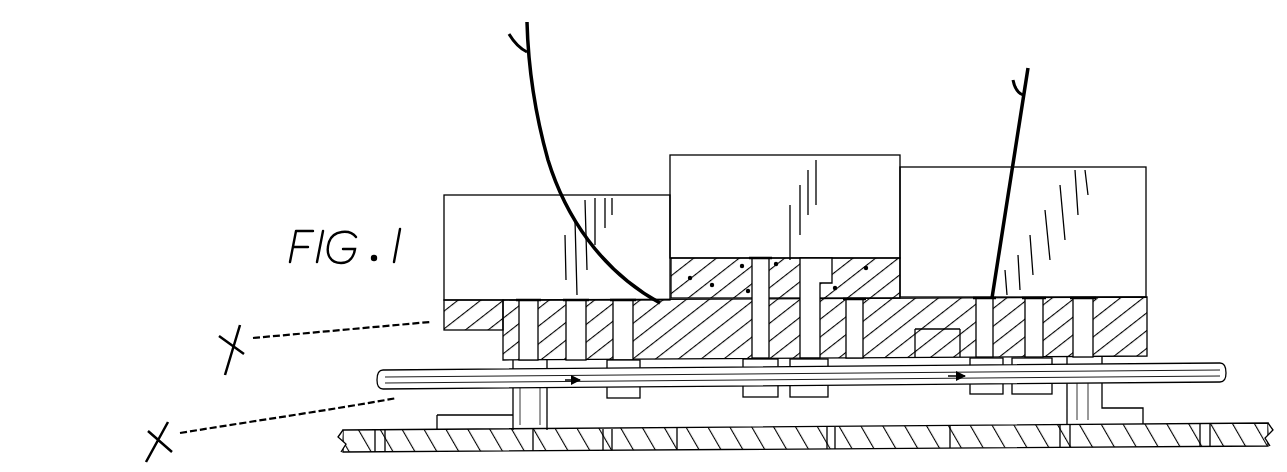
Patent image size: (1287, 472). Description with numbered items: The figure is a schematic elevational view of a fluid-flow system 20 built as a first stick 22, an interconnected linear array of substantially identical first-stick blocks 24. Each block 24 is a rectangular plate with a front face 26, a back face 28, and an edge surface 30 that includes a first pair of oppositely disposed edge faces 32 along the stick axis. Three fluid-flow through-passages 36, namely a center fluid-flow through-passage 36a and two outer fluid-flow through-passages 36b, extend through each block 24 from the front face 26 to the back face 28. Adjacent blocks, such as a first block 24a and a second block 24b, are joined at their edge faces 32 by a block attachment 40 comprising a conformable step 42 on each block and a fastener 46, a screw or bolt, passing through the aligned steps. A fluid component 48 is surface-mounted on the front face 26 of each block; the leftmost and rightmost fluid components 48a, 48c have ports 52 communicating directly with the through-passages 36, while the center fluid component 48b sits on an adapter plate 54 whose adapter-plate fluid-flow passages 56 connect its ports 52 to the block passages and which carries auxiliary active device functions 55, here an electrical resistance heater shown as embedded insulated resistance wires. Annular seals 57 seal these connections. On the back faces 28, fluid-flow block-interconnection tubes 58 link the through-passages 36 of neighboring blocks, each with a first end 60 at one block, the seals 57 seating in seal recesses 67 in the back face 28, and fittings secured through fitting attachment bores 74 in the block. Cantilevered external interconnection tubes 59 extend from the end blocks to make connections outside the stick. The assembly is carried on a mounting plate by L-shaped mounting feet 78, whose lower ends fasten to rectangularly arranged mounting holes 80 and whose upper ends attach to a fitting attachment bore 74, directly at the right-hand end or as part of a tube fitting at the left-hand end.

The fluid-flow system 20 is at (428, 206).
The first stick 22 is at (656, 172).
The first-stick blocks 24 is at (445, 300).
The first block 24a is at (503, 342).
The second block 24b is at (722, 256).
The front face 26 is at (470, 300).
The back face 28 is at (561, 405).
The edge surface 30 is at (444, 322).
The first pair of oppositely disposed edge faces 32 is at (444, 305).
The fluid-flow through-passages 36 is at (552, 306).
The center fluid-flow through-passage 36a is at (600, 362).
The outer fluid-flow through-passages 36b is at (513, 360).
The block attachment 40 is at (955, 297).
The conformable step 42 is at (948, 298).
The fastener 46 is at (674, 278).
The fluid component 48 is at (508, 187).
The fluid component 48a is at (572, 196).
The fluid component 48b is at (790, 156).
The fluid component 48c is at (1049, 168).
The ports 52 is at (603, 286).
The adapter plate 54 is at (904, 268).
The auxiliary active device functions 55 is at (729, 256).
The adapter-plate fluid-flow passages 56 is at (855, 261).
The annular seals 57 is at (660, 300).
The fluid-flow block-interconnection tubes 58 is at (681, 411).
The external interconnection tubes 59 is at (391, 371).
The first end 60 is at (630, 399).
The seal recesses 67 is at (758, 399).
The fitting attachment bores 74 is at (482, 451).
The mounting feet 78 is at (437, 423).
The mounting holes 80 is at (582, 451).